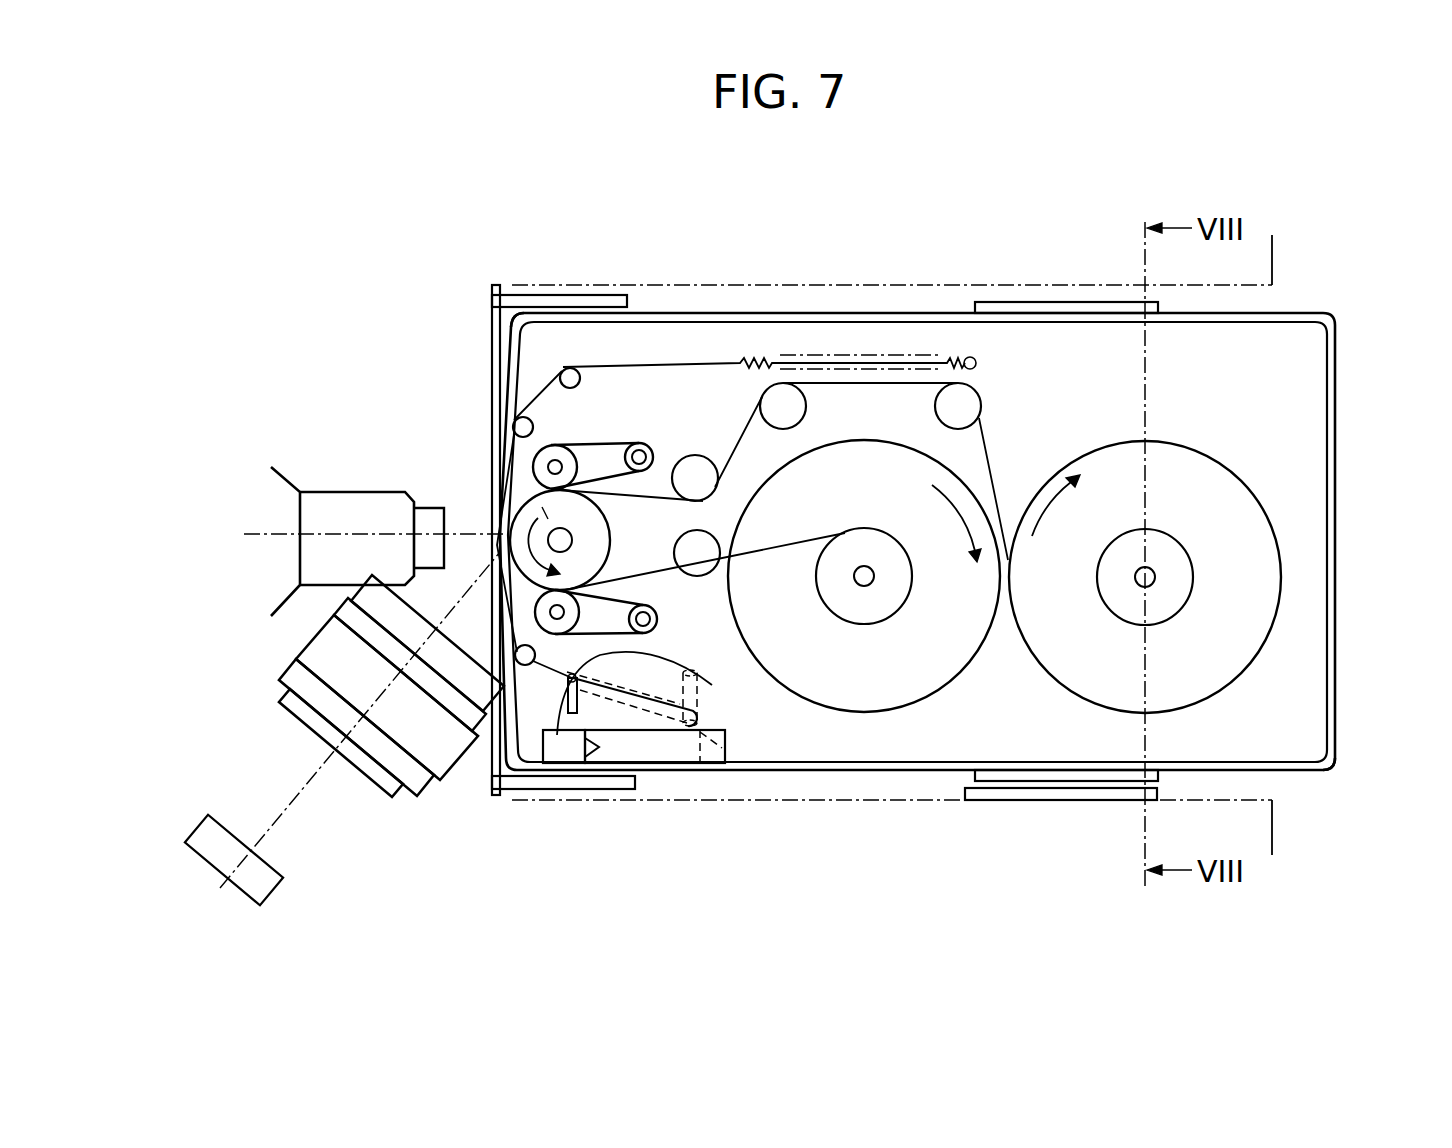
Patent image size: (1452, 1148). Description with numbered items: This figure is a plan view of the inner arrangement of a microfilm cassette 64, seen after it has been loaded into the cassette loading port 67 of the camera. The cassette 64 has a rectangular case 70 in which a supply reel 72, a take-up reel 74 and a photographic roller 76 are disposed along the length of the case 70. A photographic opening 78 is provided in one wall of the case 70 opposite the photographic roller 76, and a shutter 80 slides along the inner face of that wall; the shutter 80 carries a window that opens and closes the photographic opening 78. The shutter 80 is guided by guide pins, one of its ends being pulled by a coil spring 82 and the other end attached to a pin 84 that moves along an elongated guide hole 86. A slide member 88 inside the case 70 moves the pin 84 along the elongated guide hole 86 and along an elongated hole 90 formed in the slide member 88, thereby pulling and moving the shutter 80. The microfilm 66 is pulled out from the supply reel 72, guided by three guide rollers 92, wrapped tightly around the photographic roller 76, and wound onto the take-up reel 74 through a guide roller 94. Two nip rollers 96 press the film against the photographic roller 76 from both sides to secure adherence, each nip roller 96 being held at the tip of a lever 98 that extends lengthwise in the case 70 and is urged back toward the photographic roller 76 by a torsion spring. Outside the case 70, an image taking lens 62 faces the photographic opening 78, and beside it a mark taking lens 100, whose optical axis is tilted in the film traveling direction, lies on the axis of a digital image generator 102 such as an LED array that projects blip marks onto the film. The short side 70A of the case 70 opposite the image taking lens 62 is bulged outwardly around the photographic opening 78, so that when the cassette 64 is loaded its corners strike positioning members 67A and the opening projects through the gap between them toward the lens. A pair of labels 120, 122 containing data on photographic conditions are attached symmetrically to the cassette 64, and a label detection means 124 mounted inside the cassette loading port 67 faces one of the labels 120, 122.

The image taking lens 62 is at (350, 490).
The microfilm cassette 64 is at (1338, 753).
The microfilm 66 is at (1003, 492).
The cassette loading port 67 is at (1262, 800).
The positioning member 67A is at (498, 280).
The rectangular case 70 is at (1337, 462).
The short side 70A is at (505, 305).
The supply reel 72 is at (1257, 497).
The take-up reel 74 is at (885, 712).
The photographic roller 76 is at (542, 507).
The photographic opening 78 is at (513, 520).
The shutter 80 is at (693, 363).
The coil spring 82 is at (880, 355).
The pin 84 is at (702, 690).
The elongated guide hole 86 is at (655, 735).
The slide member 88 is at (602, 742).
The elongated hole 90 is at (565, 716).
The guide roller 92 is at (697, 463).
The guide roller 94 is at (686, 552).
The nip roller 96 is at (562, 445).
The lever 98 is at (636, 448).
The mark taking lens 100 is at (405, 790).
The digital image generator 102 is at (288, 892).
The label 120 is at (1013, 782).
The label 122 is at (1045, 300).
The label detection means 124 is at (1085, 800).